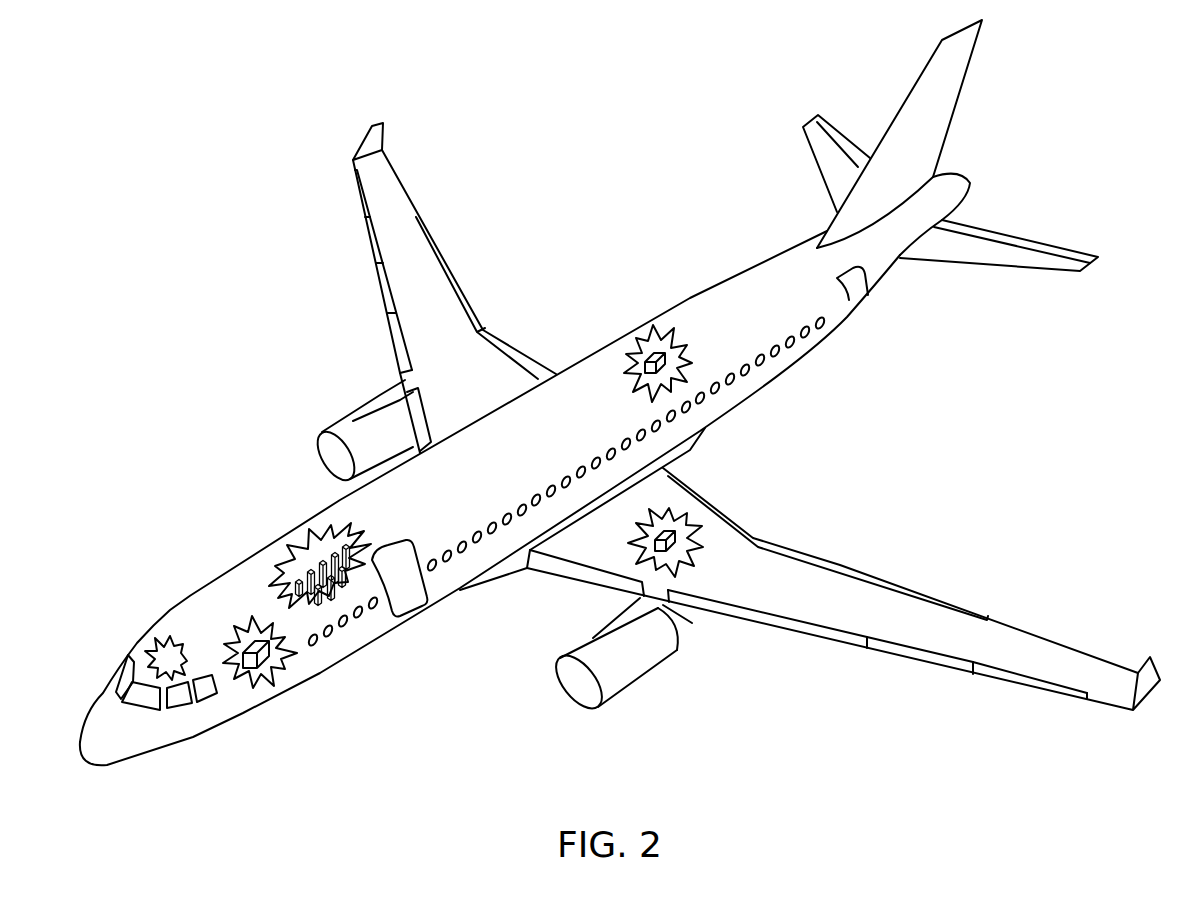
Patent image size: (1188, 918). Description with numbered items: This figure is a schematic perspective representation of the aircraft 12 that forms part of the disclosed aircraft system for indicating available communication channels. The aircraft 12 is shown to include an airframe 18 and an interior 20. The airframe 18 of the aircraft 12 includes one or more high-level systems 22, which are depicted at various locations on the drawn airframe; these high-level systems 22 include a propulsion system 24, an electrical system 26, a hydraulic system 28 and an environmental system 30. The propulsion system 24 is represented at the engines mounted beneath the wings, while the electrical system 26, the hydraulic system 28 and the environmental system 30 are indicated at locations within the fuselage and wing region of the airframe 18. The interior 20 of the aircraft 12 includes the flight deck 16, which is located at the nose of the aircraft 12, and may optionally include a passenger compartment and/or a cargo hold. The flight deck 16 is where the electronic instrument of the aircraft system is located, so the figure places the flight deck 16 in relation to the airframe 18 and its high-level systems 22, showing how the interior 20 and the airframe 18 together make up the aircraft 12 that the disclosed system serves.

The aircraft 12 is at (180, 300).
The flight deck 16 is at (155, 653).
The airframe 18 is at (222, 490).
The interior 20 is at (280, 582).
The high-level systems 22 is at (913, 492).
The propulsion system 24 is at (338, 427).
The electrical system 26 is at (250, 645).
The hydraulic system 28 is at (683, 557).
The environmental system 30 is at (640, 350).